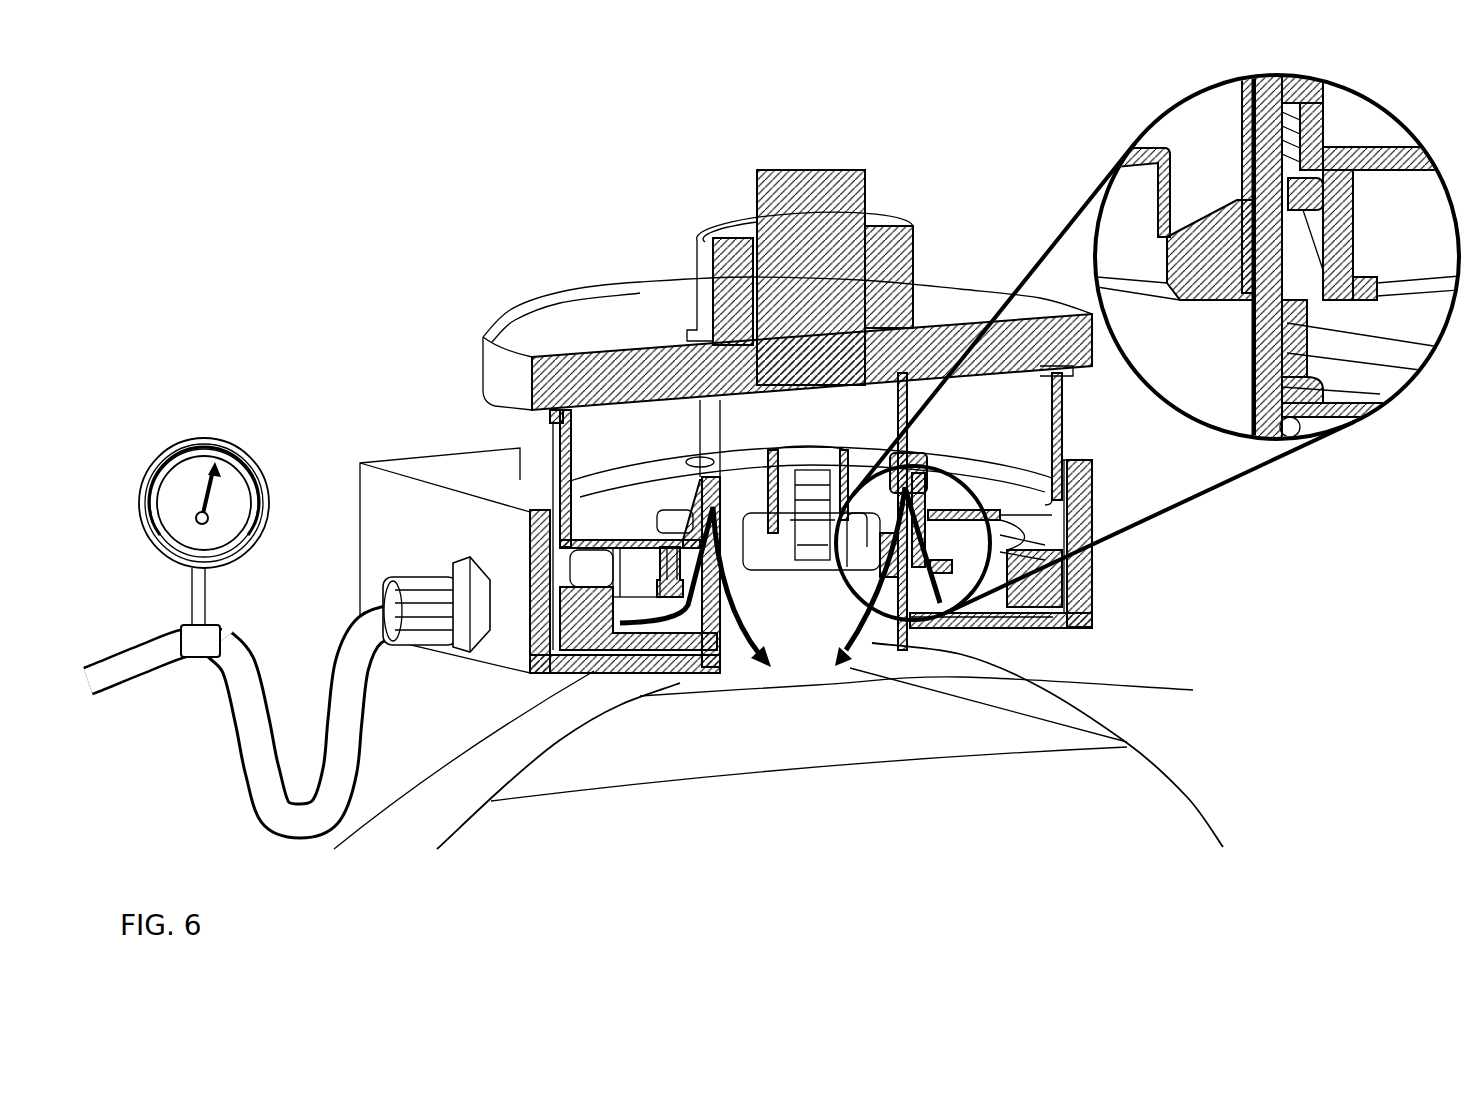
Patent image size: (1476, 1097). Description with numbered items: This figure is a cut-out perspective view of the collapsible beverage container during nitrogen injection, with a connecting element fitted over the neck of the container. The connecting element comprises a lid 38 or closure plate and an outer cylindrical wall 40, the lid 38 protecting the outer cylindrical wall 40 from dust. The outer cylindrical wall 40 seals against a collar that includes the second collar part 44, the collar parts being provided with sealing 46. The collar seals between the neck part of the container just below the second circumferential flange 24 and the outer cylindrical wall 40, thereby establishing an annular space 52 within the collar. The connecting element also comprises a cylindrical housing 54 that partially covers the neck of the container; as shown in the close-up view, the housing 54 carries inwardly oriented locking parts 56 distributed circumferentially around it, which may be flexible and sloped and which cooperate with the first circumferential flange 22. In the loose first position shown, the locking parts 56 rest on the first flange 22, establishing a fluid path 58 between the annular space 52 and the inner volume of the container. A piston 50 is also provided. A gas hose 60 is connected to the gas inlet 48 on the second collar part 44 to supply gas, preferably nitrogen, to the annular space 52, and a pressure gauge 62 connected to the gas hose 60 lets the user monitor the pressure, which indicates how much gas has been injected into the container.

The first circumferential flange 22 is at (1307, 283).
The second circumferential flange 24 is at (1313, 390).
The lid 38 is at (637, 427).
The outer cylindrical wall 40 is at (537, 507).
The second collar part 44 is at (447, 477).
The sealing 46 is at (533, 547).
The gas inlet 48 is at (420, 577).
The piston 50 is at (643, 327).
The annular space 52 is at (1037, 520).
The cylindrical housing 54 is at (1060, 410).
The locking parts 56 is at (1320, 222).
The fluid path 58 is at (862, 650).
The gas hose 60 is at (347, 673).
The pressure gauge 62 is at (217, 445).